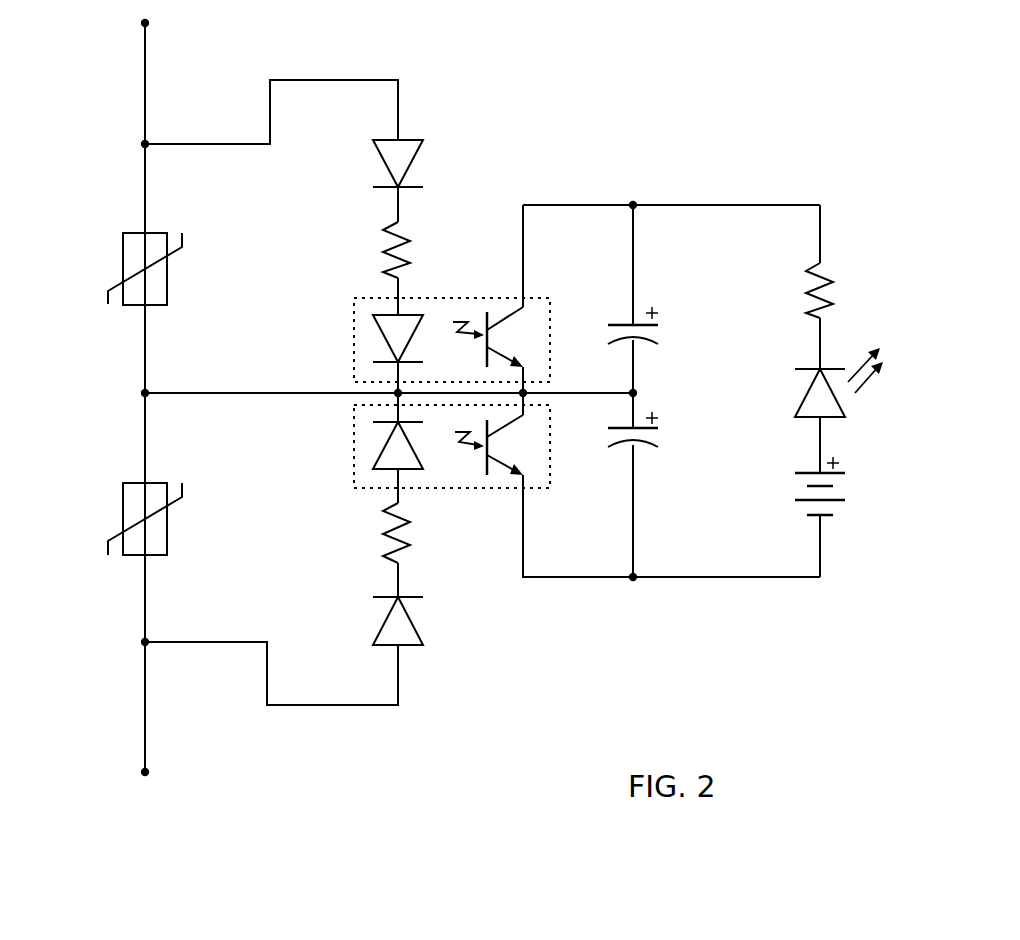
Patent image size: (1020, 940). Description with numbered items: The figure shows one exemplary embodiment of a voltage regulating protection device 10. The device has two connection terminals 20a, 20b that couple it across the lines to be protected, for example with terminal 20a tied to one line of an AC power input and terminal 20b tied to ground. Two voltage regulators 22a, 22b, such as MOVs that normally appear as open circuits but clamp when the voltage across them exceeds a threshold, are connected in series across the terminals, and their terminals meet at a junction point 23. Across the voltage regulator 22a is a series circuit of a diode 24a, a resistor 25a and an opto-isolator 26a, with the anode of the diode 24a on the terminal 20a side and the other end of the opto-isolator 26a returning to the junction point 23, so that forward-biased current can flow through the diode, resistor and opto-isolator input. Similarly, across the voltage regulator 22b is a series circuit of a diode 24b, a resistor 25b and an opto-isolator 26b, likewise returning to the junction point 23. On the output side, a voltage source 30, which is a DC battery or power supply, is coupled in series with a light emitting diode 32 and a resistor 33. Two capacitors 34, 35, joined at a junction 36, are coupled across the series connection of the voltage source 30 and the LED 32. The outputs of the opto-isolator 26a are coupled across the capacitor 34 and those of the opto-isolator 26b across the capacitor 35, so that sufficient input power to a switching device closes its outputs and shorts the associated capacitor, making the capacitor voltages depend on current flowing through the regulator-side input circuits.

The voltage regulating protection device 10 is at (656, 69).
The connection terminal 20a is at (145, 52).
The connection terminal 20b is at (145, 742).
The voltage regulator 22a is at (123, 253).
The voltage regulator 22b is at (123, 507).
The junction point 23 is at (143, 391).
The diode 24a is at (420, 150).
The diode 24b is at (412, 623).
The resistor 25a is at (405, 245).
The resistor 25b is at (408, 523).
The opto-isolator 26a is at (346, 316).
The opto-isolator 26b is at (346, 470).
The voltage source 30 is at (840, 500).
The light emitting diode 32 is at (847, 414).
The resistor 33 is at (830, 297).
The capacitor 34 is at (625, 323).
The capacitor 35 is at (648, 443).
The junction 36 is at (637, 390).